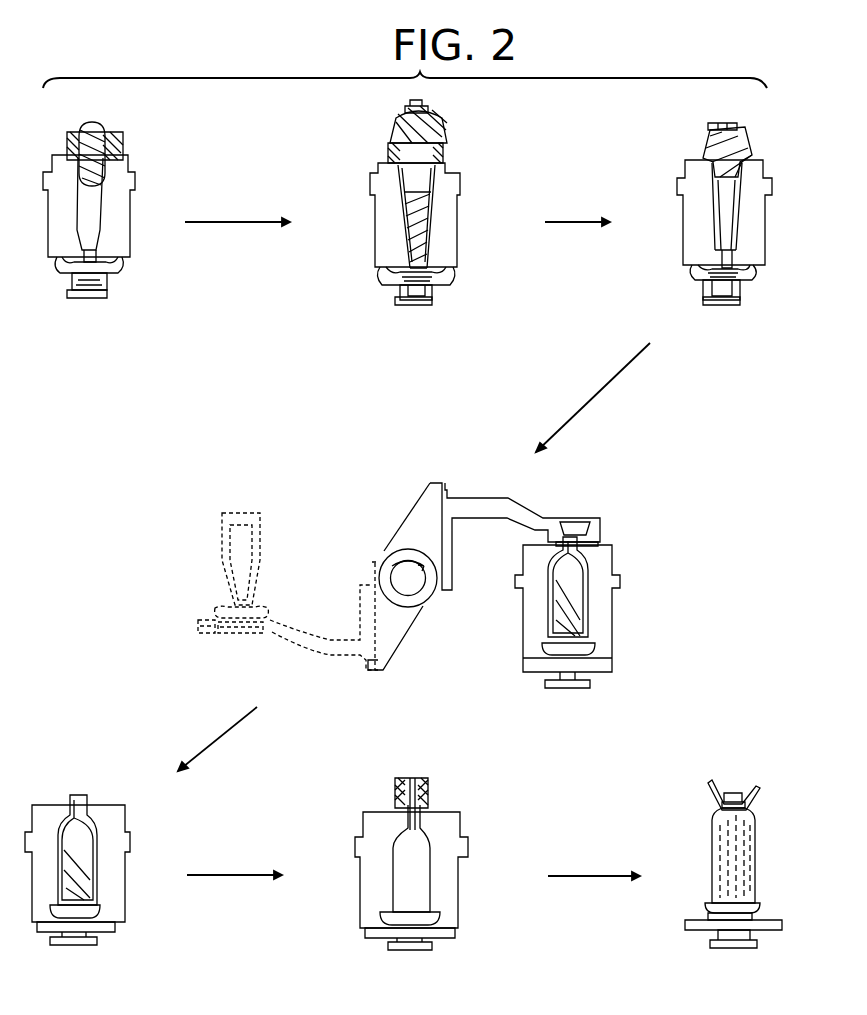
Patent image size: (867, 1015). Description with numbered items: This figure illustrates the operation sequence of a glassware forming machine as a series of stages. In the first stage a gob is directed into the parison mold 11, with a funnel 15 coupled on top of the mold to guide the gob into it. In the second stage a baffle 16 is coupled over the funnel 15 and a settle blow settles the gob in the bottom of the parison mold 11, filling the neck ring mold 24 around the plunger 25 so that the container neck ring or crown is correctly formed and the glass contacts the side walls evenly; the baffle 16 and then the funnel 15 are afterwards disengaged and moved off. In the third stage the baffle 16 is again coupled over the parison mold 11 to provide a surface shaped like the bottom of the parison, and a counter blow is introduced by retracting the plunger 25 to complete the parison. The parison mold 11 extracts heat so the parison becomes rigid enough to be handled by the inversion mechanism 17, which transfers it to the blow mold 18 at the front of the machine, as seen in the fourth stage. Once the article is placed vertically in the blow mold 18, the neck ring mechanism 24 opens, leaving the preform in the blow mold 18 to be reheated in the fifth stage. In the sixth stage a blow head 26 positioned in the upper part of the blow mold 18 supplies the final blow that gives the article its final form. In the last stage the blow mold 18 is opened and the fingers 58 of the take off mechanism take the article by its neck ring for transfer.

The parison mold 11 is at (127, 255).
The funnel 15 is at (123, 149).
The baffle 16 is at (427, 121).
The inversion mechanism 17 is at (416, 523).
The blow mold 18 is at (606, 631).
The neck ring mold 24 is at (442, 280).
The plunger 25 is at (428, 263).
The blow head 26 is at (430, 789).
The fingers 58 is at (705, 804).